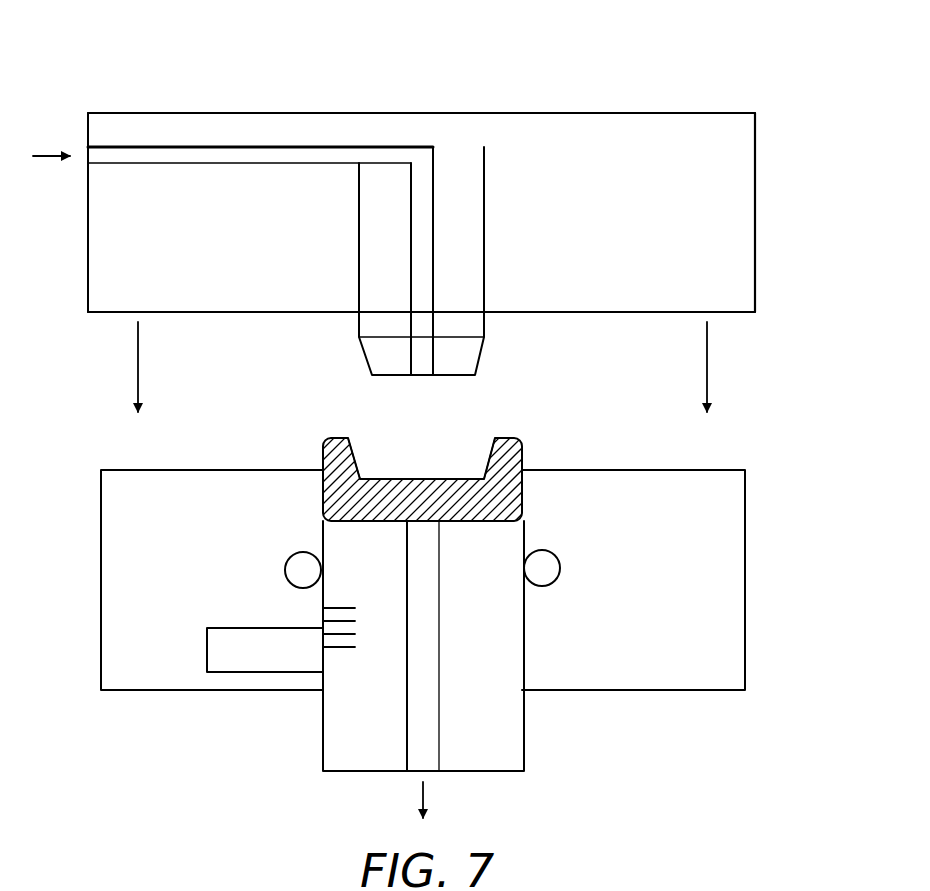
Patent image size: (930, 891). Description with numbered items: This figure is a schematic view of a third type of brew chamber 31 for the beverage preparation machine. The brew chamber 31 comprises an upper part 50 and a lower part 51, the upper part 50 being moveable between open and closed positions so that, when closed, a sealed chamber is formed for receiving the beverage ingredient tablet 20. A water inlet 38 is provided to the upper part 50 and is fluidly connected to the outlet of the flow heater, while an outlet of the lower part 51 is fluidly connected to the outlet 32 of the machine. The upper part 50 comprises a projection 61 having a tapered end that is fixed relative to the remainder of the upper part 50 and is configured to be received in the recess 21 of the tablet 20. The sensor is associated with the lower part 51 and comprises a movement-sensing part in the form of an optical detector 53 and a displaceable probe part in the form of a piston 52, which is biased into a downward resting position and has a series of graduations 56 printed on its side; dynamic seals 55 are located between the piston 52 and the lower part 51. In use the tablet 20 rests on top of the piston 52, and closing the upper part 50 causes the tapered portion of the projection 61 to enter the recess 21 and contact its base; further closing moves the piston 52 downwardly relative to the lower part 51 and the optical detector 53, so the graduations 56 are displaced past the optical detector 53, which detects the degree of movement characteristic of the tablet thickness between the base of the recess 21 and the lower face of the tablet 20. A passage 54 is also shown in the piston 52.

The brew chamber 31 is at (694, 66).
The water inlet 38 is at (56, 152).
The upper part 50 is at (748, 126).
The projection 61 is at (468, 357).
The beverage ingredient tablet 20 is at (335, 445).
The recess 21 is at (421, 447).
The lower part 51 is at (737, 485).
The piston 52 is at (515, 757).
The optical detector 53 is at (216, 646).
The passage 54 is at (410, 727).
The dynamic seals 55 is at (553, 575).
The graduations 56 is at (343, 606).
The outlet 32 is at (420, 805).